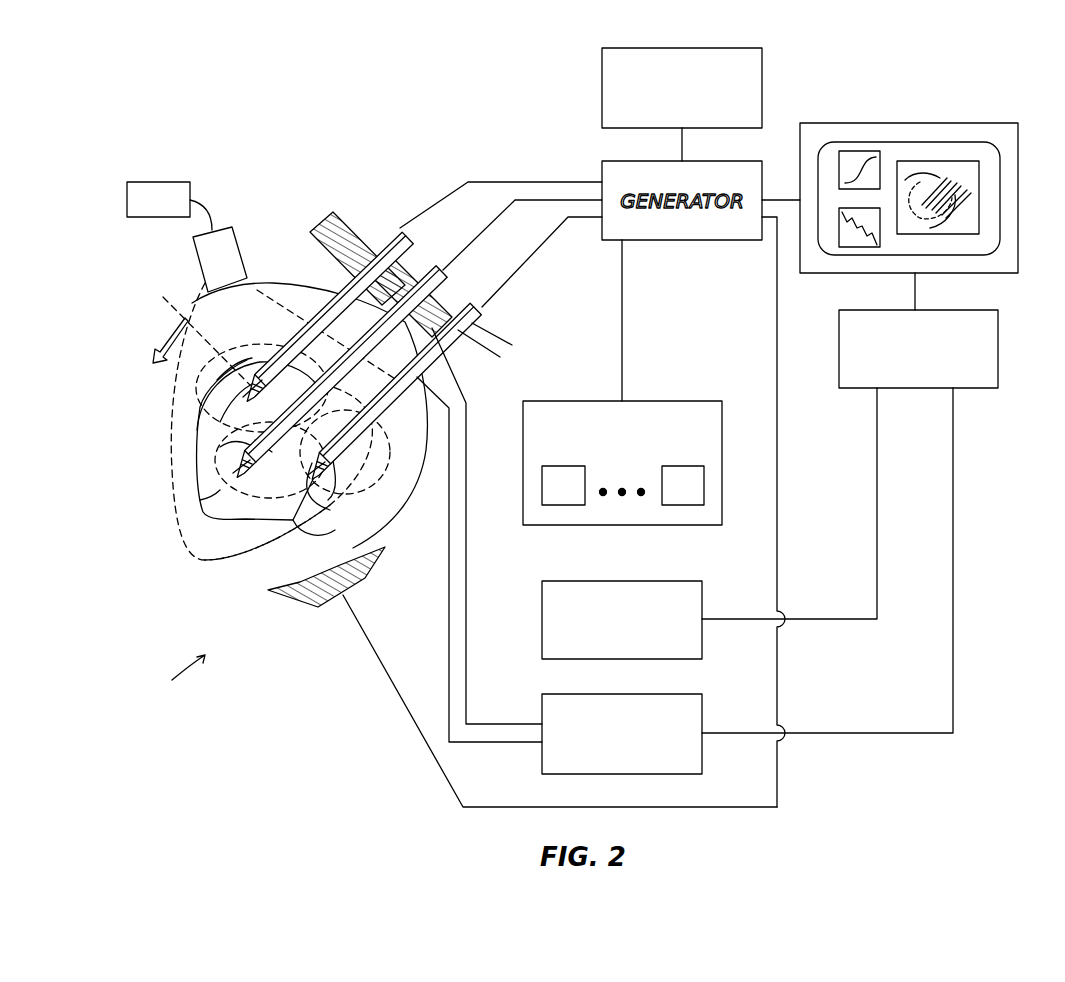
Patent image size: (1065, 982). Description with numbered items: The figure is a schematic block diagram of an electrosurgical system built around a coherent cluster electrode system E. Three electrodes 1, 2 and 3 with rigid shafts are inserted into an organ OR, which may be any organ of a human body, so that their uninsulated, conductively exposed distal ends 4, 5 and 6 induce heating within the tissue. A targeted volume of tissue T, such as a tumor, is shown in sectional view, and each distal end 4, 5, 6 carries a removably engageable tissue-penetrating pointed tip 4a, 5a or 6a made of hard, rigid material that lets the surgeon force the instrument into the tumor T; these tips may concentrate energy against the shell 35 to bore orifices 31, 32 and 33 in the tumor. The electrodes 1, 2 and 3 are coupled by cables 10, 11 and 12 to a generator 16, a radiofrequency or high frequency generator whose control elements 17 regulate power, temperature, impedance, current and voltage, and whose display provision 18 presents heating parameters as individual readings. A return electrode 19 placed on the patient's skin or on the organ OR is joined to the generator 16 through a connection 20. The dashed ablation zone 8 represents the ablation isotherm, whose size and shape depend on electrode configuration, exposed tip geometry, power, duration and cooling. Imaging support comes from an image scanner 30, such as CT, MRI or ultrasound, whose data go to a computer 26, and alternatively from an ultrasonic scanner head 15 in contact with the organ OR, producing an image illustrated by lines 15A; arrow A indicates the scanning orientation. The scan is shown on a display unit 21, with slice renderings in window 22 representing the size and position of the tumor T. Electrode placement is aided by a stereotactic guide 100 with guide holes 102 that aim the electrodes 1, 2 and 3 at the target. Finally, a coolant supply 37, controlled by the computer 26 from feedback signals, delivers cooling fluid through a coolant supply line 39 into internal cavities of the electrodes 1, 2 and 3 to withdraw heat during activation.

The electrode 1 is at (396, 238).
The electrode 2 is at (437, 270).
The electrode 3 is at (468, 305).
The distal end 4 is at (257, 365).
The tissue-penetrating pointed tip 4a is at (247, 377).
The distal end 5 is at (237, 473).
The tissue-penetrating pointed tip 5a is at (235, 468).
The distal end 6 is at (348, 448).
The tissue-penetrating pointed tip 6a is at (343, 468).
The ablation zone 8 is at (187, 557).
The connection cable 10 is at (477, 170).
The connection cable 11 is at (537, 198).
The connection cable 12 is at (548, 237).
The ultrasonic scanner head 15 is at (200, 265).
The image lines 15A is at (258, 290).
The generator 16 is at (183, 180).
The control elements 17 is at (735, 48).
The display provision 18 is at (680, 400).
The return electrode 19 is at (302, 593).
The connection 20 is at (395, 687).
The display unit 21 is at (815, 123).
The window 22 is at (958, 160).
The computer 26 is at (862, 388).
The image scanner 30 is at (670, 582).
The orifice 31 is at (267, 447).
The orifice 32 is at (217, 490).
The orifice 33 is at (358, 522).
The shell 35 is at (293, 522).
The coolant supply 37 is at (685, 694).
The coolant supply line 39 is at (468, 577).
The stereotactic guide 100 is at (332, 220).
The guide hole 102 is at (380, 218).
The direction arrow A is at (163, 340).
The cluster electrode system E is at (166, 672).
The organ OR is at (397, 533).
The targeted volume of tissue T is at (170, 540).